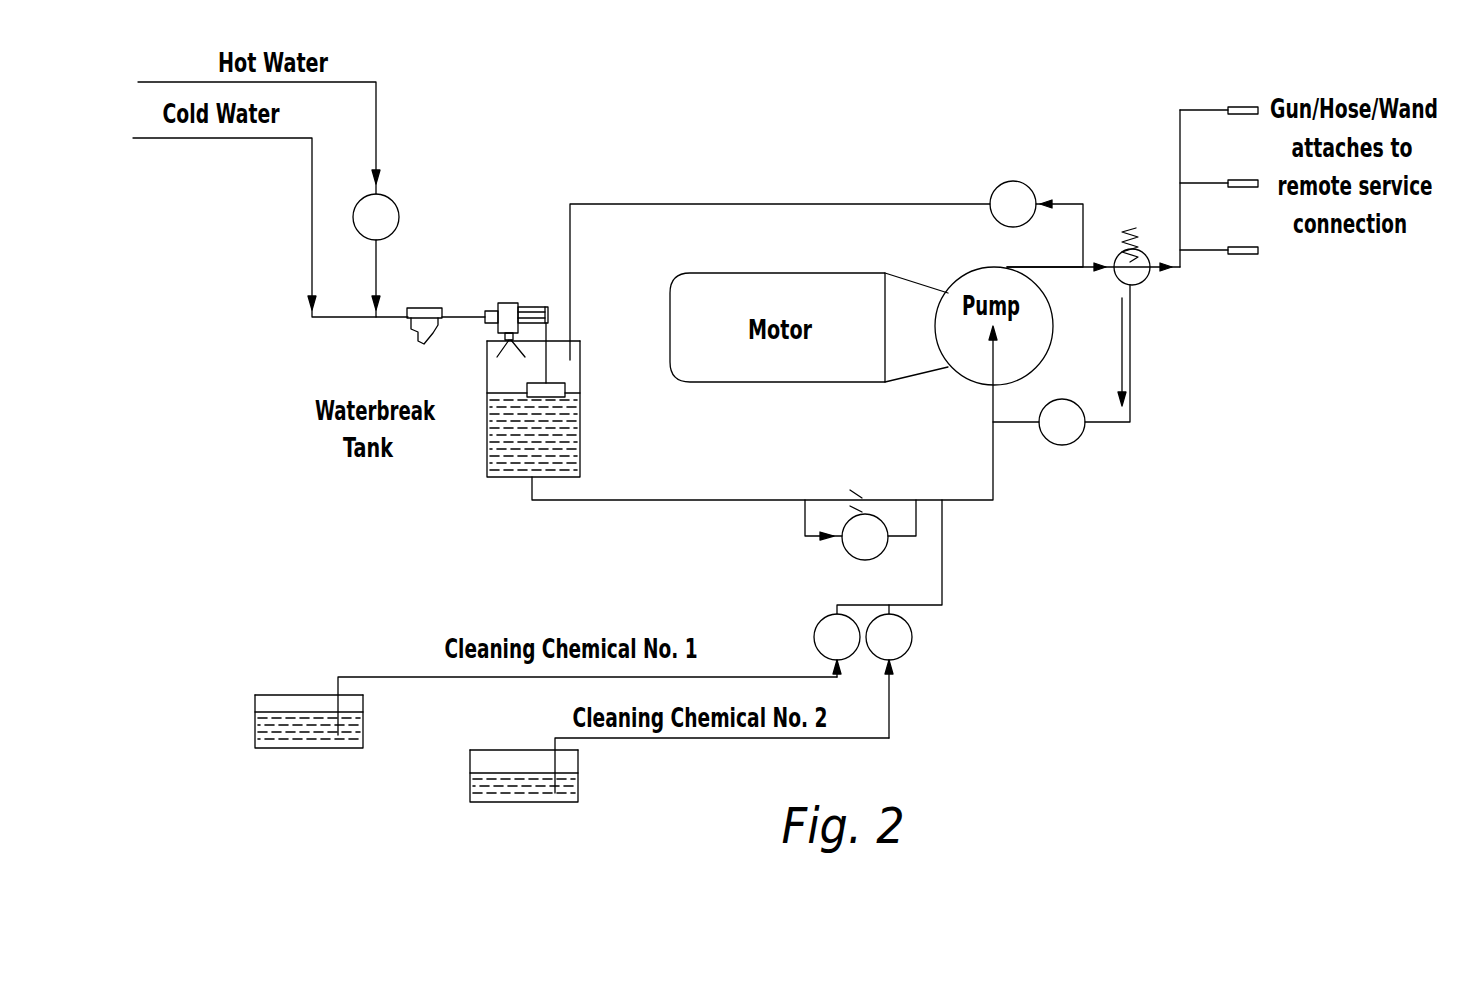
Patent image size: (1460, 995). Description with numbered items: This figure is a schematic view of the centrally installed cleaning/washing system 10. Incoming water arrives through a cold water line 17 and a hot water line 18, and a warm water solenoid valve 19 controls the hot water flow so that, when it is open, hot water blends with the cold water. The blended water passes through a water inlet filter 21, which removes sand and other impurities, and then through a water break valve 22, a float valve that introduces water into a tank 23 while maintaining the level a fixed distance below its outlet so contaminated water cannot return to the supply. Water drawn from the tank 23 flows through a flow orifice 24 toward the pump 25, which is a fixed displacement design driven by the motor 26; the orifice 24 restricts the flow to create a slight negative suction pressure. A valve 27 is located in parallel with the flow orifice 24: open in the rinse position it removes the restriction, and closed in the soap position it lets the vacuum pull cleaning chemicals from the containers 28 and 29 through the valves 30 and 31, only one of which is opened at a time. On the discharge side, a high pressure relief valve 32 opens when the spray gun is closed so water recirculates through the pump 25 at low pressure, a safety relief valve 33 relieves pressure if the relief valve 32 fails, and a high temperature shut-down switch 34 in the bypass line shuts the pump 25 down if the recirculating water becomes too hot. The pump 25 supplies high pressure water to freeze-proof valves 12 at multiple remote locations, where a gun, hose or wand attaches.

The cleaning/washing system 10 is at (657, 145).
The freeze-proof valve 12 is at (1238, 107).
The cold water line 17 is at (311, 167).
The hot water line 18 is at (378, 102).
The warm water solenoid valve 19 is at (393, 197).
The water inlet filter 21 is at (420, 308).
The water break valve 22 is at (508, 303).
The tank 23 is at (486, 408).
The flow orifice 24 is at (857, 490).
The pump 25 is at (978, 282).
The motor 26 is at (800, 283).
The valve 27 is at (847, 553).
The container 28 is at (293, 700).
The container 29 is at (507, 755).
The valve 30 is at (814, 637).
The valve 31 is at (913, 637).
The high pressure relief valve 32 is at (1141, 283).
The safety relief valve 33 is at (1030, 183).
The high temperature shut-down switch 34 is at (1068, 445).